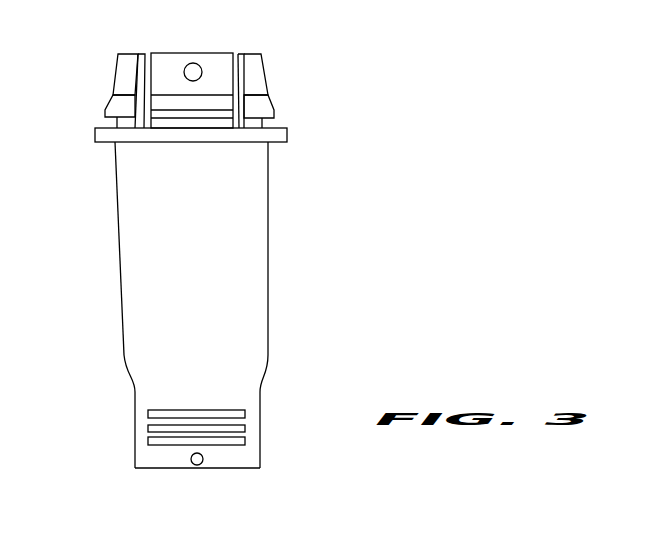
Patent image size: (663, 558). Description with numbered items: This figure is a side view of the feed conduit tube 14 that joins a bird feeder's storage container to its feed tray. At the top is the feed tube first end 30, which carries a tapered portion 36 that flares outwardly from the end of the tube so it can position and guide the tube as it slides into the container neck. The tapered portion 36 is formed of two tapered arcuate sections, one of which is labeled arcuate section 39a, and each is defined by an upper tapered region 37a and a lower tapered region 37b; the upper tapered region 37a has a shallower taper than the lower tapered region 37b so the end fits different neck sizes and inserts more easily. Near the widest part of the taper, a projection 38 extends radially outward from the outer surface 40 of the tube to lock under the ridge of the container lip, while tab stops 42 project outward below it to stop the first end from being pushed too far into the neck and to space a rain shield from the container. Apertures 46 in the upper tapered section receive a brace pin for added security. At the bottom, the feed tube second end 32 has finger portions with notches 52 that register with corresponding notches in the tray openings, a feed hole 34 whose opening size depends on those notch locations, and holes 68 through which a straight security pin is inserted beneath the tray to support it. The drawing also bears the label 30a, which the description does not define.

The feed conduit tube 14 is at (398, 57).
The feed tube first end 30 is at (233, 41).
The bottom of container 30a is at (138, 468).
The feed tube second end 32 is at (282, 463).
The feed hole 34 is at (132, 389).
The tapered portion 36 is at (111, 63).
The upper tapered region 37a is at (265, 78).
The lower tapered region 37b is at (272, 100).
The projection 38 is at (103, 109).
The arcuate section 39a is at (262, 62).
The outer surface 40 is at (268, 202).
The tab stops 42 is at (93, 134).
The apertures 46 is at (190, 63).
The notches 52 is at (245, 428).
The holes 68 is at (197, 465).